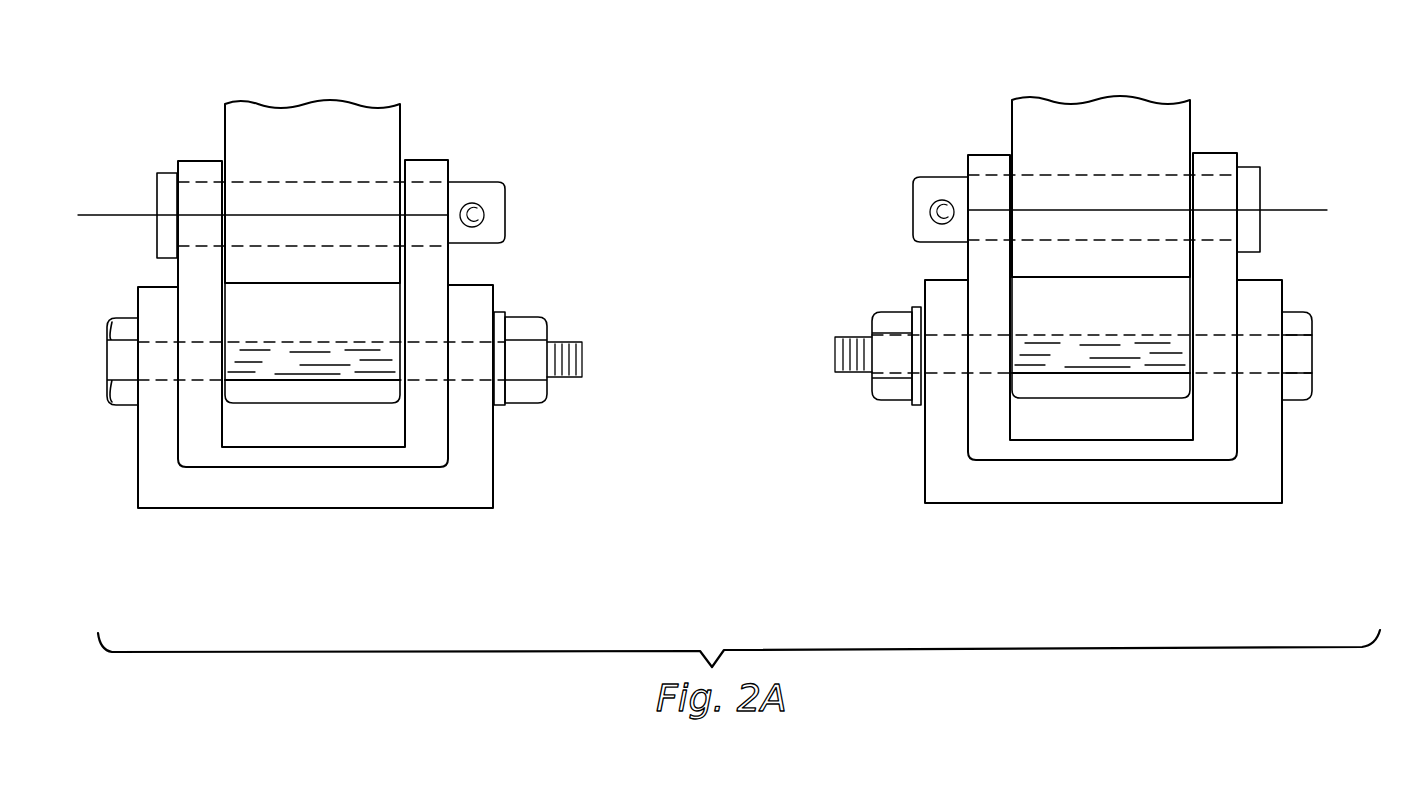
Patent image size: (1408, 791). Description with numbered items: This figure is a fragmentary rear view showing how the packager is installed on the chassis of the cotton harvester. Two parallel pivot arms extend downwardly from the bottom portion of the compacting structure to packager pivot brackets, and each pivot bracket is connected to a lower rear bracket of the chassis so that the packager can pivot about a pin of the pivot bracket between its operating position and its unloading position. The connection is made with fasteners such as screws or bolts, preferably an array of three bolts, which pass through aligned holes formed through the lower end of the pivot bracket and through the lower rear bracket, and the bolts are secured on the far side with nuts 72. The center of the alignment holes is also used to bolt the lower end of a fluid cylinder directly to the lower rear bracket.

The nut 72 is at (880, 402).